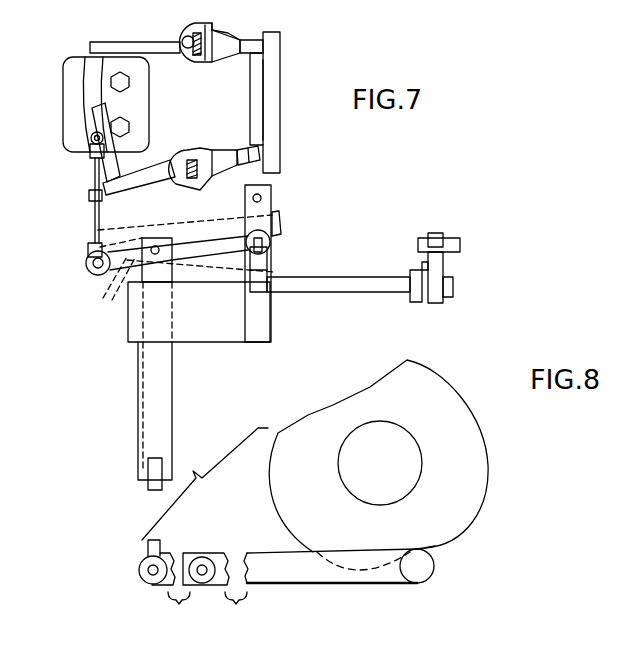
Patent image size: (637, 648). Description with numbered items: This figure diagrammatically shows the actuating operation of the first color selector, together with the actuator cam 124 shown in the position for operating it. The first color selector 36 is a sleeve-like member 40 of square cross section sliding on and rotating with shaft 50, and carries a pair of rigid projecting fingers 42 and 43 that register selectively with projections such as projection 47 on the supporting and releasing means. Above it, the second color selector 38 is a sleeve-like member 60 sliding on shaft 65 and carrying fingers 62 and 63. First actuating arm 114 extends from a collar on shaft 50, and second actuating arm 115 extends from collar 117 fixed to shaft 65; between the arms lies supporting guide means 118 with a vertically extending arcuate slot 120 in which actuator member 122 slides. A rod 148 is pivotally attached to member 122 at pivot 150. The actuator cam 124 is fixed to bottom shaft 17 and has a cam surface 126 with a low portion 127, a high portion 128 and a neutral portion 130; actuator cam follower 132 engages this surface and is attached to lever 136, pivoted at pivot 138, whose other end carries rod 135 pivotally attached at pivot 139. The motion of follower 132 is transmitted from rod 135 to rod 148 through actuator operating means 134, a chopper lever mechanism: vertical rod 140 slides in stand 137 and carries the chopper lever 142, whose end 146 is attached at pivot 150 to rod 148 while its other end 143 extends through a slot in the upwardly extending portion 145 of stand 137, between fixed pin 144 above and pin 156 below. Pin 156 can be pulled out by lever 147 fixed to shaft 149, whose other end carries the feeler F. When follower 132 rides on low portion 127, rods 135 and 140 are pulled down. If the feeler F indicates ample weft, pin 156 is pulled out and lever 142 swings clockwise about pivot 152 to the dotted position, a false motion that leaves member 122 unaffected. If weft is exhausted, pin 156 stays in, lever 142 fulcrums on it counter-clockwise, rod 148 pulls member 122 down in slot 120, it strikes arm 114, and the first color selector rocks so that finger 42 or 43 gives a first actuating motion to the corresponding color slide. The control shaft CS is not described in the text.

In FIG. 7, the second actuating arm 115 is at (139, 50).
In FIG. 7, the first color selector 36 is at (161, 46).
In FIG. 7, the sleeve-like member 60 is at (213, 44).
In FIG. 7, the shaft 65 is at (198, 57).
In FIG. 7, the finger 62 is at (236, 33).
In FIG. 7, the collar 117 is at (192, 24).
In FIG. 7, the finger 63 is at (262, 41).
In FIG. 7, the projection 47 is at (276, 88).
In FIG. 7, the control shaft CS is at (274, 112).
In FIG. 7, the second color selector 38 is at (242, 136).
In FIG. 7, the finger 42 is at (261, 153).
In FIG. 7, the finger 43 is at (223, 156).
In FIG. 7, the sleeve-like member 40 is at (199, 156).
In FIG. 7, the arcuate slot 120 is at (100, 80).
In FIG. 7, the supporting guide means 118 is at (70, 103).
In FIG. 7, the actuator member 122 is at (103, 184).
In FIG. 7, the shaft 50 is at (173, 177).
In FIG. 7, the first actuating arm 114 is at (117, 190).
In FIG. 7, the pivot 150 is at (89, 146).
In FIG. 7, the rod 148 is at (96, 228).
In FIG. 7, the pivot 152 is at (88, 270).
In FIG. 7, the end of lever 143 is at (205, 236).
In FIG. 7, the end of lever 146 is at (177, 269).
In FIG. 7, the chopper lever 142 is at (173, 228).
In FIG. 7, the stand 137 is at (133, 326).
In FIG. 7, the actuator operating means 134 is at (128, 345).
In FIG. 7, the vertical rod 140 is at (148, 416).
In FIG. 7, the rod 135 is at (150, 483).
In FIG. 8, the rod 135 is at (150, 547).
In FIG. 7, the pin 144 is at (262, 198).
In FIG. 7, the upwardly extending portion 145 is at (262, 223).
In FIG. 7, the pin 156 is at (269, 246).
In FIG. 7, the lever 147 is at (263, 266).
In FIG. 7, the shaft 149 is at (360, 276).
In FIG. 7, the feeler F is at (465, 235).
In FIG. 8, the actuator cam 124 is at (475, 465).
In FIG. 8, the neutral portion 130 is at (445, 368).
In FIG. 8, the cam surface 126 is at (465, 397).
In FIG. 8, the bottom shaft 17 is at (390, 453).
In FIG. 8, the high portion 128 is at (298, 546).
In FIG. 8, the low portion 127 is at (432, 547).
In FIG. 8, the actuator cam follower 132 is at (422, 577).
In FIG. 8, the lever 136 is at (272, 575).
In FIG. 8, the pivot 138 is at (202, 575).
In FIG. 8, the pivot 139 is at (153, 575).